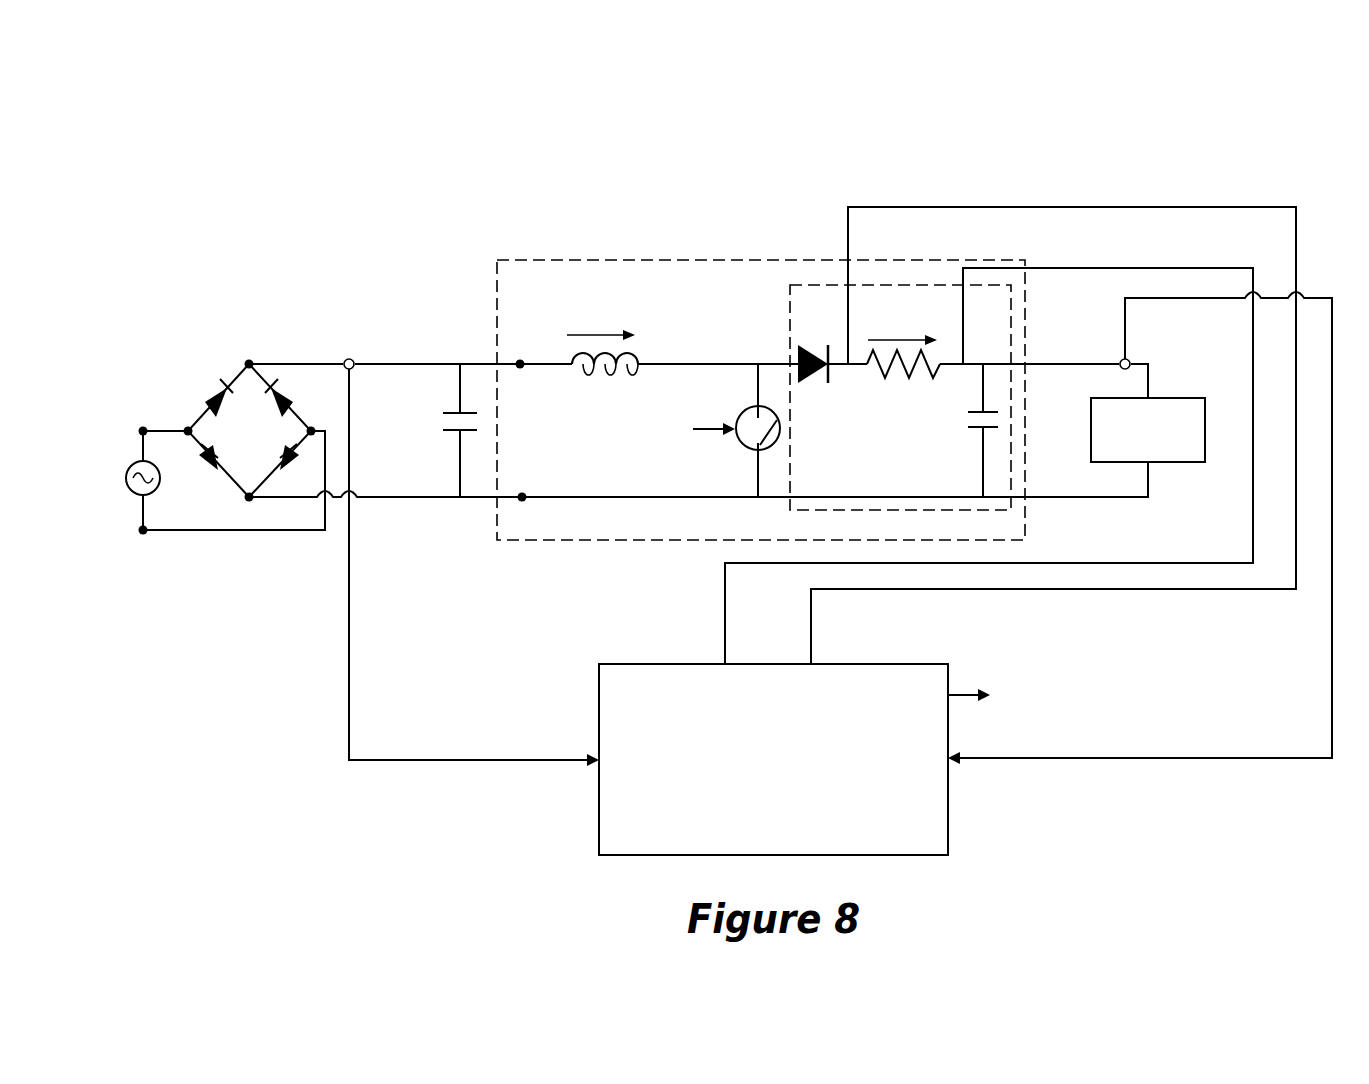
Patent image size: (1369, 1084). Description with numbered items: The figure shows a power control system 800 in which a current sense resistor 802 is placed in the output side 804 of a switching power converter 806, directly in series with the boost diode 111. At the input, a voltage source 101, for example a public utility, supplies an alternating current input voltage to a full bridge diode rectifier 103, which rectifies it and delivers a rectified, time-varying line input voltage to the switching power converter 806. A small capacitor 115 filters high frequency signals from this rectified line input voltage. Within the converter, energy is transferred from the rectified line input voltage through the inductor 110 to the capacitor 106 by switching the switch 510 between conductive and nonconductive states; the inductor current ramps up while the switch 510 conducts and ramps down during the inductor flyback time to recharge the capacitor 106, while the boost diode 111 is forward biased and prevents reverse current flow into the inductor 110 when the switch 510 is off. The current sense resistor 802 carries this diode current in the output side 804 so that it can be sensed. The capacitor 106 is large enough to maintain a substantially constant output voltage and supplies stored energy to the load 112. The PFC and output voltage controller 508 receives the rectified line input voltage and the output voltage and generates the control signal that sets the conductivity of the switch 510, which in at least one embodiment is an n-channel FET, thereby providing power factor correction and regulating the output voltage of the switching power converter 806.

The power control system 800 is at (1028, 146).
The switching power converter 806 is at (535, 260).
The output side 804 is at (925, 285).
The voltage source 101 is at (135, 502).
The full bridge diode rectifier 103 is at (250, 431).
The capacitor 115 is at (453, 432).
The inductor 110 is at (585, 376).
The switch 510 is at (745, 447).
The boost diode 111 is at (812, 352).
The current sense resistor 802 is at (905, 378).
The capacitor 106 is at (977, 428).
The load 112 is at (1163, 398).
The PFC and output voltage controller 508 is at (620, 664).